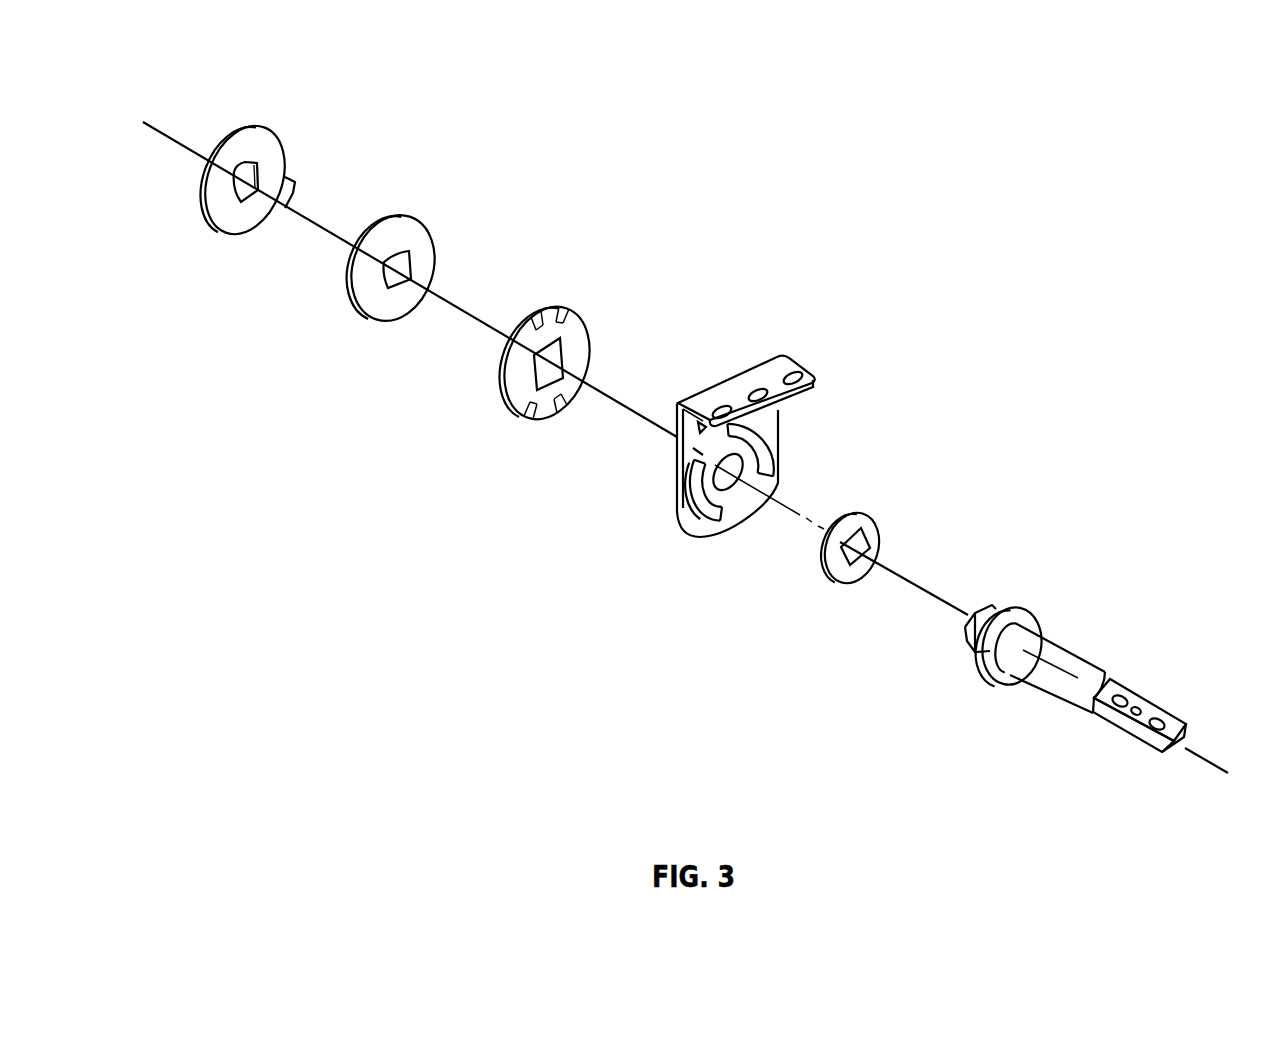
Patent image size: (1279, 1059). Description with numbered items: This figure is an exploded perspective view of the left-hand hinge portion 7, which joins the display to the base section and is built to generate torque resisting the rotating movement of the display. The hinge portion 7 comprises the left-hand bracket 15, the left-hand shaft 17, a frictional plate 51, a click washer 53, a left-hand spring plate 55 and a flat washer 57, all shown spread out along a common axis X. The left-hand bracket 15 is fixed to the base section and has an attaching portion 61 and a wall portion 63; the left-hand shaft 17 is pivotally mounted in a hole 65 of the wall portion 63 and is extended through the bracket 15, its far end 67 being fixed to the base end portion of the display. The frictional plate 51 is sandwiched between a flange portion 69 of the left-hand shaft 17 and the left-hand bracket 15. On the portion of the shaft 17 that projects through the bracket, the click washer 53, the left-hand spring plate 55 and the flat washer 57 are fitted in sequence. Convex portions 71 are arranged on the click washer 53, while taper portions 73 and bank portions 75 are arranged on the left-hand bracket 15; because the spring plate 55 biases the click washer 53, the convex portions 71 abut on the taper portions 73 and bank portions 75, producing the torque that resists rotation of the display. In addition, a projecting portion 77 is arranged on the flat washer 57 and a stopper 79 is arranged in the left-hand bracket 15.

The left-hand hinge portion 7 is at (947, 232).
The left-hand bracket 15 is at (708, 448).
The left-hand shaft 17 is at (1052, 692).
The frictional plate 51 is at (886, 510).
The click washer 53 is at (588, 307).
The left-hand spring plate 55 is at (438, 215).
The flat washer 57 is at (280, 128).
The attaching portion 61 is at (757, 377).
The wall portion 63 is at (685, 457).
The hole 65 is at (775, 465).
The tang 67 is at (1128, 737).
The flange portion 69 is at (985, 673).
The convex portions 71 is at (542, 418).
The taper portions 73 is at (687, 493).
The bank portions 75 is at (702, 518).
The projecting portion 77 is at (269, 212).
The stopper 79 is at (678, 403).
The axis X is at (1193, 747).